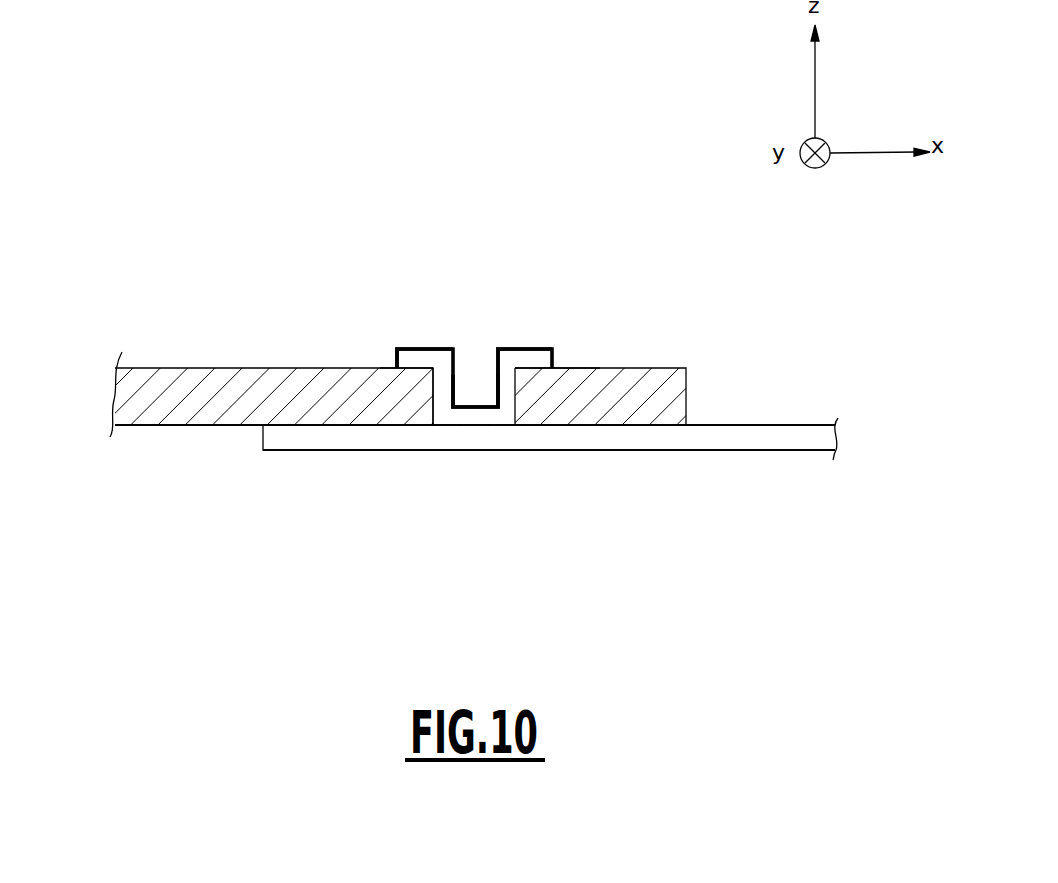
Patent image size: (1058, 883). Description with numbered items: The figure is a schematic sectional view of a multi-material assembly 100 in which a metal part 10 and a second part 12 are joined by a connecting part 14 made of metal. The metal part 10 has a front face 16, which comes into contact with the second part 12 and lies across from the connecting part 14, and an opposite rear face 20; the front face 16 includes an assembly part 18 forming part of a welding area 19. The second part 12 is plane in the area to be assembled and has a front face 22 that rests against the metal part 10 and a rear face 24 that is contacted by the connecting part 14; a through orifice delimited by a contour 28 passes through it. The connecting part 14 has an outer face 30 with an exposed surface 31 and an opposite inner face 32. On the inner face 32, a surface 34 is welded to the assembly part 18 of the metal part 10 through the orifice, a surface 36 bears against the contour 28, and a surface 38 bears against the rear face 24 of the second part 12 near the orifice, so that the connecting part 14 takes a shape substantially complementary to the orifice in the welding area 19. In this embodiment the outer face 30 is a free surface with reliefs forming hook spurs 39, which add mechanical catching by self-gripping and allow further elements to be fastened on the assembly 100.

The multi-material assembly 100 is at (192, 164).
The metal part 10 is at (852, 437).
The second part 12 is at (706, 398).
The connecting part 14 is at (531, 330).
The front face 16 is at (770, 425).
The assembly part 18 is at (475, 425).
The welding area 19 is at (442, 425).
The rear face 20 is at (647, 450).
The front face 22 is at (307, 425).
The rear face 24 is at (202, 367).
The contour 28 is at (433, 399).
The outer face 30 is at (398, 348).
The exposed surface 31 is at (473, 400).
The inner face 32 is at (390, 368).
The surface 34 is at (493, 425).
The surface 36 is at (515, 400).
The surface 38 is at (535, 372).
The hook spurs 39 is at (501, 348).